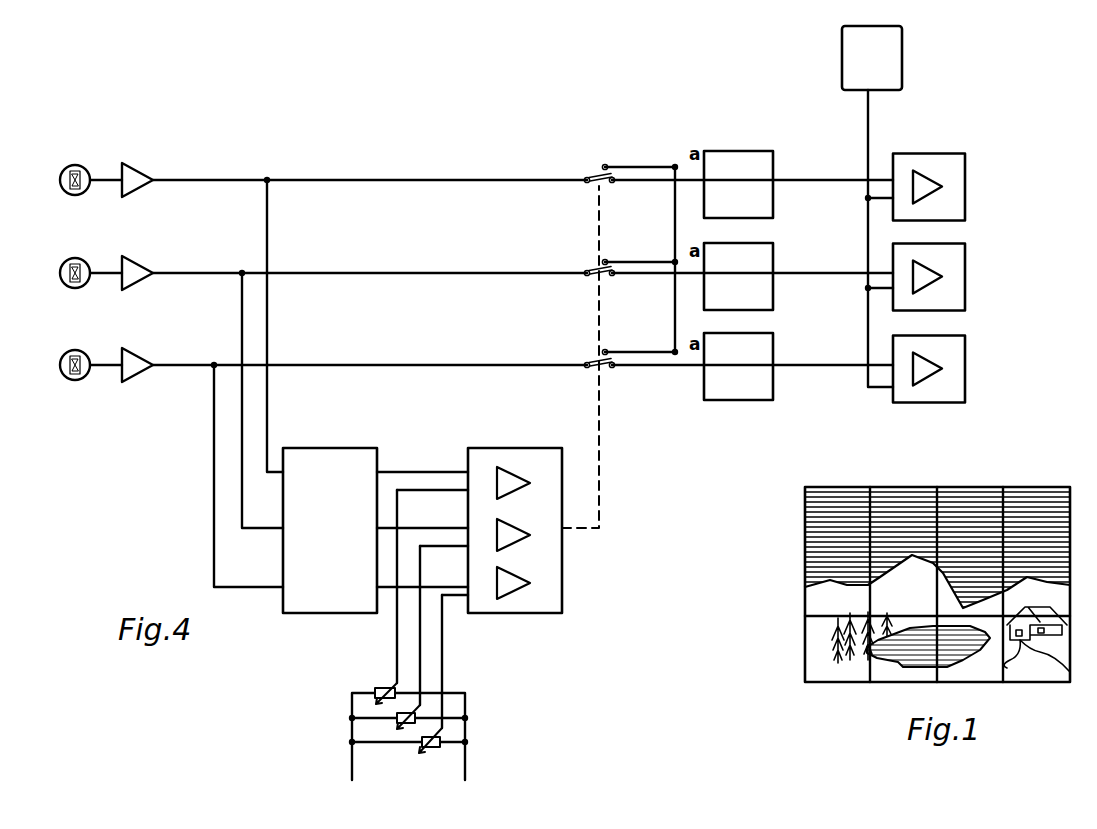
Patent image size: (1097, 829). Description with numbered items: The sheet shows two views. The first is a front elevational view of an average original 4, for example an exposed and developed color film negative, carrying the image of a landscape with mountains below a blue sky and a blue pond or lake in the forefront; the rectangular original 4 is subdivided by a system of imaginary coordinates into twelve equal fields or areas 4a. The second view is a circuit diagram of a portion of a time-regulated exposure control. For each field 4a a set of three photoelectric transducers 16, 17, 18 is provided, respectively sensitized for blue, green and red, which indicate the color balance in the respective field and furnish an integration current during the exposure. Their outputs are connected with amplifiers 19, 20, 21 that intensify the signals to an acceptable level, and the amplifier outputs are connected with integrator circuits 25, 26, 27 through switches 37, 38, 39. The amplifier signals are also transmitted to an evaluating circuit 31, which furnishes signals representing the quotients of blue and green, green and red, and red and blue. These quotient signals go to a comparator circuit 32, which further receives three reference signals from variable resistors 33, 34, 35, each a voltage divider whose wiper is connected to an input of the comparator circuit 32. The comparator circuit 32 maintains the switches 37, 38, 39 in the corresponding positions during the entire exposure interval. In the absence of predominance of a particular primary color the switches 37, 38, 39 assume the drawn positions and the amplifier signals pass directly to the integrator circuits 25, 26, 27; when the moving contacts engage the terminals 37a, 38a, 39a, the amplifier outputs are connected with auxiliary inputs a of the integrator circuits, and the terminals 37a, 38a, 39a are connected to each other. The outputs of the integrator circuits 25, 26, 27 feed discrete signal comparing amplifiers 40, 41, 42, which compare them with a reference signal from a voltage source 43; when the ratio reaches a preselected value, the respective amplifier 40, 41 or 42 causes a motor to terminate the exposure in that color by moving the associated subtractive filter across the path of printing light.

In FIG. 1, the original 4 is at (1047, 490).
In FIG. 1, the field 4a is at (812, 514).
In FIG. 4, the photoelectric transducer 16 is at (75, 382).
In FIG. 4, the photoelectric transducer 17 is at (75, 290).
In FIG. 4, the photoelectric transducer 18 is at (75, 197).
In FIG. 4, the amplifier 19 is at (143, 356).
In FIG. 4, the amplifier 20 is at (143, 264).
In FIG. 4, the amplifier 21 is at (143, 170).
In FIG. 4, the integrator circuit 25 is at (768, 347).
In FIG. 4, the integrator circuit 26 is at (768, 257).
In FIG. 4, the integrator circuit 27 is at (768, 165).
In FIG. 4, the evaluating circuit 31 is at (317, 614).
In FIG. 4, the comparator circuit 32 is at (562, 595).
In FIG. 4, the variable resistor 33 is at (378, 686).
In FIG. 4, the variable resistor 34 is at (392, 731).
In FIG. 4, the variable resistor 35 is at (436, 747).
In FIG. 4, the switch 37 is at (591, 361).
In FIG. 4, the terminal 37a is at (606, 350).
In FIG. 4, the switch 38 is at (591, 269).
In FIG. 4, the terminal 38a is at (606, 260).
In FIG. 4, the switch 39 is at (591, 176).
In FIG. 4, the terminal 39a is at (606, 165).
In FIG. 4, the signal comparing amplifier 40 is at (958, 378).
In FIG. 4, the signal comparing amplifier 41 is at (958, 287).
In FIG. 4, the signal comparing amplifier 42 is at (958, 202).
In FIG. 4, the voltage source 43 is at (902, 73).